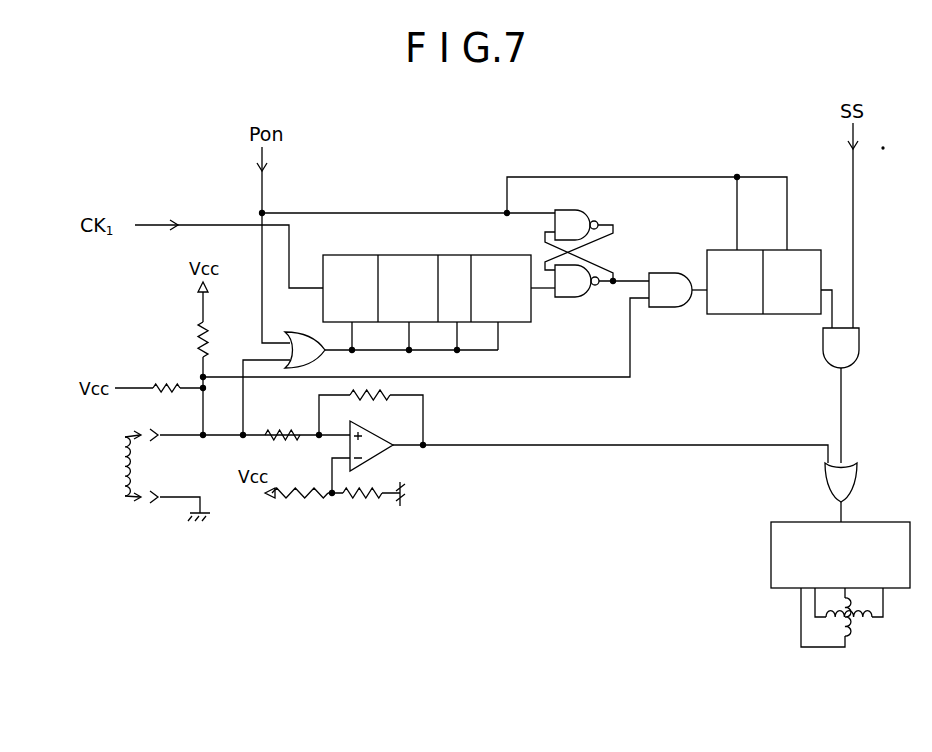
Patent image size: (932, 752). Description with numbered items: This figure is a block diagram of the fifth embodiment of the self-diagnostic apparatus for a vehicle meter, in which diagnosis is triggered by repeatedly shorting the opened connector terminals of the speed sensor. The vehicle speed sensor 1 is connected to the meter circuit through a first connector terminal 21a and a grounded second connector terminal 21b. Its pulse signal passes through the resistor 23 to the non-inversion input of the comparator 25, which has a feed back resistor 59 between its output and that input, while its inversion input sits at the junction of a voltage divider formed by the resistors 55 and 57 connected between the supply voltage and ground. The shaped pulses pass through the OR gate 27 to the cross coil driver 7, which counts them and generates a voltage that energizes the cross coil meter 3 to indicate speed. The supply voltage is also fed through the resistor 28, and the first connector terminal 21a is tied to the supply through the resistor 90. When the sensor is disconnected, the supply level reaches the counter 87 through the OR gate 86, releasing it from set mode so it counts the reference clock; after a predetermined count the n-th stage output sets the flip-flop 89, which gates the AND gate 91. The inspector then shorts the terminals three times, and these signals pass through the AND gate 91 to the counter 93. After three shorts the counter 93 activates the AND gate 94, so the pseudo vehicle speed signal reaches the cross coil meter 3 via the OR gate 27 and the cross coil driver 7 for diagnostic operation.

The vehicle speed sensor 1 is at (118, 466).
The cross coil meter 3 is at (850, 634).
The cross coil driver 7 is at (771, 548).
The first connector terminal 21a is at (150, 431).
The second connector terminal 21b is at (148, 504).
The resistor 23 is at (290, 430).
The comparator 25 is at (380, 452).
The OR gate 27 is at (825, 481).
The resistor 28 is at (163, 384).
The resistor 55 is at (296, 500).
The resistor 57 is at (365, 500).
The feed back resistor 59 is at (384, 400).
The OR gate 86 is at (300, 340).
The counter 87 is at (372, 260).
The flip-flop 89 is at (602, 209).
The resistor 90 is at (198, 340).
The AND gate 91 is at (672, 303).
The counter 93 is at (740, 306).
The AND gate 94 is at (862, 348).